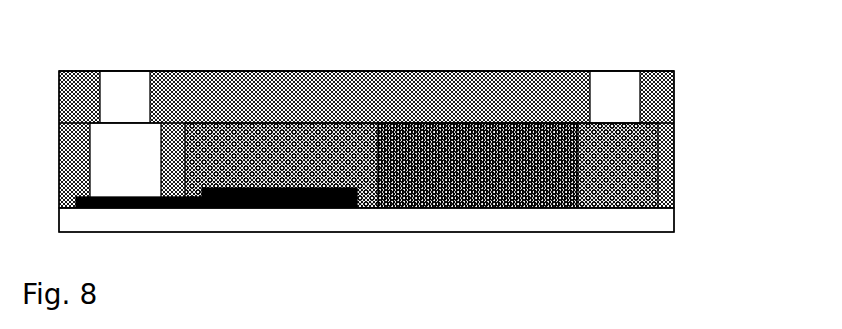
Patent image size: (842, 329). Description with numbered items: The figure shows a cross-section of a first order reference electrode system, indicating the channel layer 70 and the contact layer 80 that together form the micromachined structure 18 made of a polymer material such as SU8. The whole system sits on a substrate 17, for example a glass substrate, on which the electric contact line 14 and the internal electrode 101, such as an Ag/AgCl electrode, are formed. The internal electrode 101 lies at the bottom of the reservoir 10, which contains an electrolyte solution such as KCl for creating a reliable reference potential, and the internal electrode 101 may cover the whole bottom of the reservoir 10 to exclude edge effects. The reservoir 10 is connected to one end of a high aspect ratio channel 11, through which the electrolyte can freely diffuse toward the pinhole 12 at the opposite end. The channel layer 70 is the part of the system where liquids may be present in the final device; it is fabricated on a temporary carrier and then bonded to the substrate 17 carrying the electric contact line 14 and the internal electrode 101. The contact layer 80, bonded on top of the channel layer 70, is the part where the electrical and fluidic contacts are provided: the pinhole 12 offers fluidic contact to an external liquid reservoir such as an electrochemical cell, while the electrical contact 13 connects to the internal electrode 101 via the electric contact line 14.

The micromachined structure 18 is at (411, 92).
The electrical contact 13 is at (130, 90).
The pinhole 12 is at (610, 91).
The reservoir 10 is at (421, 165).
The high aspect ratio channel 11 is at (492, 168).
The electric contact line 14 is at (165, 209).
The internal electrode 101 is at (305, 199).
The substrate 17 is at (441, 220).
The contact layer 80 is at (676, 73).
The channel layer 70 is at (676, 125).